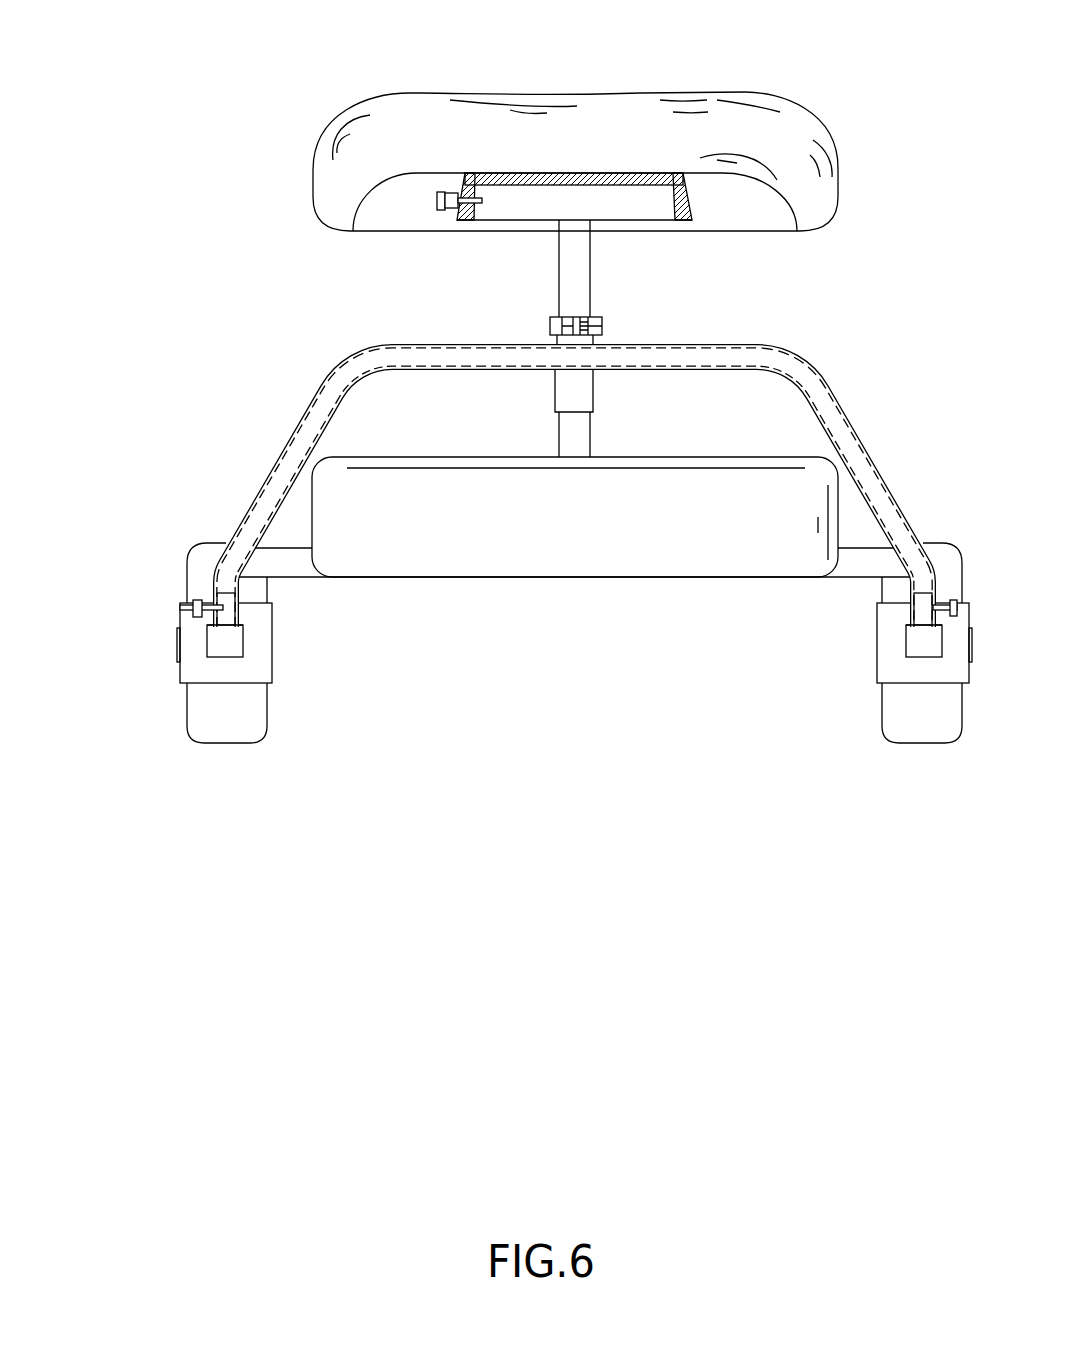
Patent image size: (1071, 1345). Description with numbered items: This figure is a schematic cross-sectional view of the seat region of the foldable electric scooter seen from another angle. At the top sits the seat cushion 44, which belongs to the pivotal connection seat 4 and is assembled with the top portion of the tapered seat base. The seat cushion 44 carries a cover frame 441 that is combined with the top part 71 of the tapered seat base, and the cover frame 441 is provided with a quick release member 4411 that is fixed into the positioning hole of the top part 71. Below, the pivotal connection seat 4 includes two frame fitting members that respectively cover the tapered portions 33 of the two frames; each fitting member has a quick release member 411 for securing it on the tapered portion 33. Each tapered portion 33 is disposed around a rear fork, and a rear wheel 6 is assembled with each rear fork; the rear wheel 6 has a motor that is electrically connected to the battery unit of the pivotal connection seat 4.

The pivotal connection seat 4 is at (272, 380).
The seat cushion 44 is at (398, 107).
The cover frame 441 is at (687, 192).
The quick release member 4411 is at (450, 202).
The top part 71 is at (672, 203).
The tapered portion 33 is at (227, 618).
The quick release member 411 is at (182, 607).
The rear wheel 6 is at (145, 733).